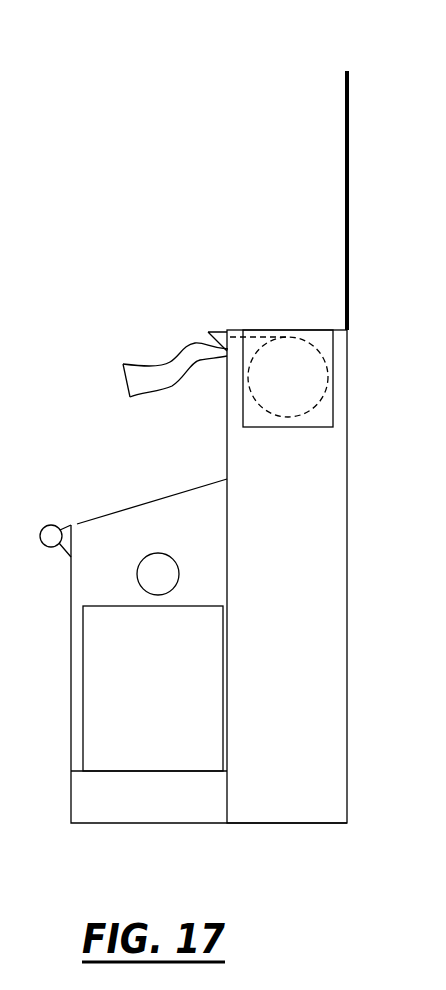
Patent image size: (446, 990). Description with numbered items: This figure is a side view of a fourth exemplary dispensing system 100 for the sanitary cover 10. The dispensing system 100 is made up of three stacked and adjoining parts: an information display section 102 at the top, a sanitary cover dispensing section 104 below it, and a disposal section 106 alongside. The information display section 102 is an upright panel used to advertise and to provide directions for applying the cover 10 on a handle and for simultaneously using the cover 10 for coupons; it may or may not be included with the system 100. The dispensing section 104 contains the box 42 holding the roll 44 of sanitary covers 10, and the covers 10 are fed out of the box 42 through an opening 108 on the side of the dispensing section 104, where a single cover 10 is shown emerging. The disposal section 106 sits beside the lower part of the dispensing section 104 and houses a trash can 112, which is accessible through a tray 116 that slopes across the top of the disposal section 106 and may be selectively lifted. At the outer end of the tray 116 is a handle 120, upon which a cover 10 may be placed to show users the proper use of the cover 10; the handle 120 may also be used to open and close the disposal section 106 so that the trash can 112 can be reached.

The dispensing system 100 is at (159, 62).
The information display section 102 is at (349, 145).
The sanitary cover dispensing section 104 is at (347, 487).
The box 42 is at (332, 405).
The roll 44 is at (289, 337).
The opening 108 is at (221, 330).
The sanitary cover 10 is at (139, 352).
The disposal section 106 is at (71, 626).
The tray 116 is at (145, 500).
The handle 120 is at (43, 525).
The trash can 112 is at (83, 696).